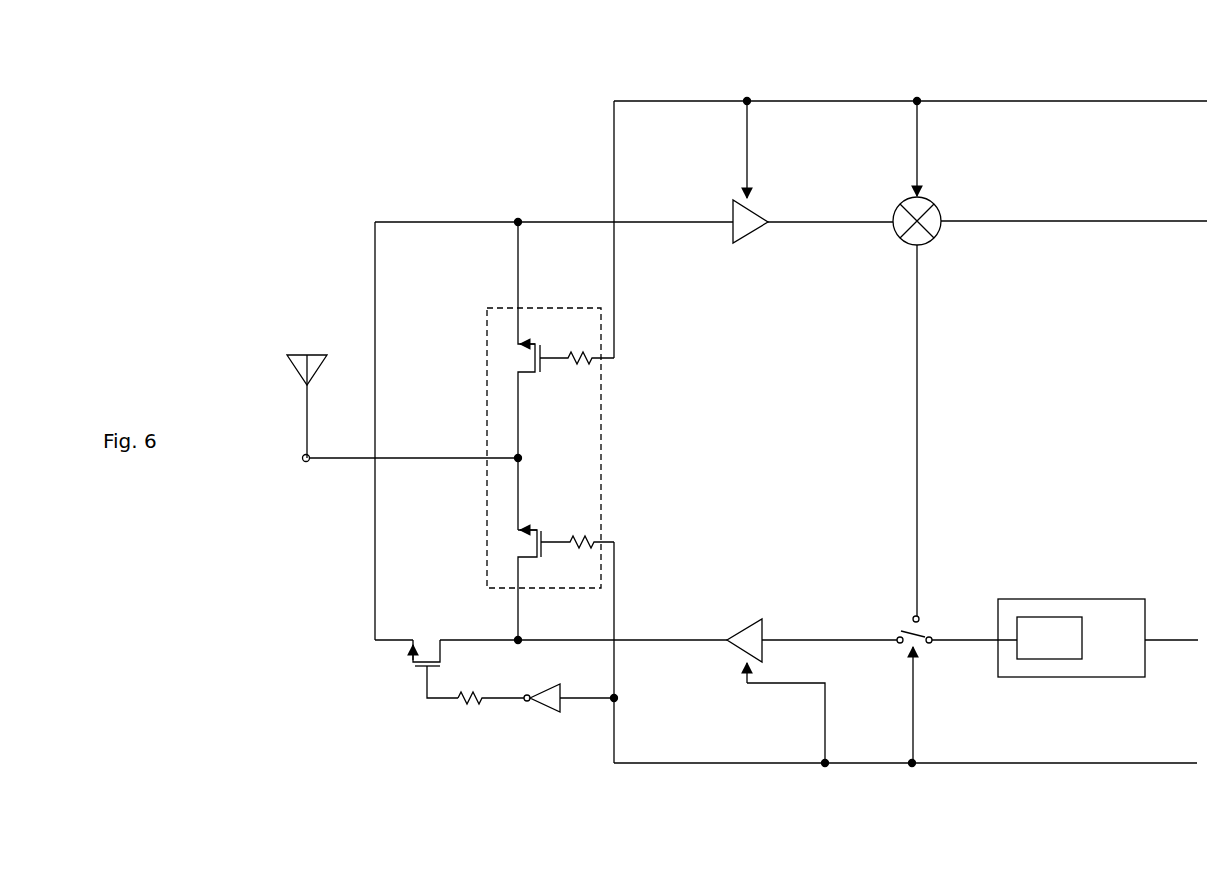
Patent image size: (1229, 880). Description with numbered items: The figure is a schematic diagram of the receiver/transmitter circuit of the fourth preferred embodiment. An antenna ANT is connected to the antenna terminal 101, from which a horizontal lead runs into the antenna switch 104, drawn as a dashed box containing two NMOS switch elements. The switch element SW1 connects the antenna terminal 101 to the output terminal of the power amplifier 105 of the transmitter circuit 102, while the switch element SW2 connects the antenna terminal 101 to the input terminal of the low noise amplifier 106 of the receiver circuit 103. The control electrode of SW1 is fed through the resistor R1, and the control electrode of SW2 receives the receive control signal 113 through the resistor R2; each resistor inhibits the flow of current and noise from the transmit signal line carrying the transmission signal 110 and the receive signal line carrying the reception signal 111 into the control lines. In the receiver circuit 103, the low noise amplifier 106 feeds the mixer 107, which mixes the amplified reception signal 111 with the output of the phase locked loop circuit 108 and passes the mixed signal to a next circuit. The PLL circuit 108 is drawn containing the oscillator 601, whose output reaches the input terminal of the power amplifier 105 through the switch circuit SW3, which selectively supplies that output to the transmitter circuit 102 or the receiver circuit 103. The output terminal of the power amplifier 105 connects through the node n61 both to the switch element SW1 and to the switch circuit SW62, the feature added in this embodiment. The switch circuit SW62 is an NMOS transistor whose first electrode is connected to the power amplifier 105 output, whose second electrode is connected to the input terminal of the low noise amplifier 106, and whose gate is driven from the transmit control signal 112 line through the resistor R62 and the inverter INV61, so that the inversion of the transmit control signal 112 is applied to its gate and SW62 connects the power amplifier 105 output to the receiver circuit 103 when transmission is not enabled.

The antenna terminal 101 is at (303, 467).
The transmitter circuit 102 is at (756, 585).
The receiver circuit 103 is at (781, 304).
The antenna switch 104 is at (486, 520).
The power amplifier 105 is at (766, 624).
The low noise amplifier 106 is at (766, 206).
The mixer 107 is at (940, 200).
The phase locked loop circuit 108 is at (1083, 598).
The transmission signal 110 is at (682, 645).
The reception signal 111 is at (664, 222).
The transmit control signal 112 is at (1078, 763).
The receive control signal 113 is at (1095, 101).
The oscillator 601 is at (1042, 660).
The antenna ANT is at (301, 350).
The switch element SW1 is at (545, 570).
The switch element SW2 is at (545, 376).
The switch circuit SW3 is at (932, 612).
The switch circuit SW62 is at (432, 656).
The resistor R1 is at (590, 538).
The resistor R2 is at (598, 362).
The resistor R62 is at (487, 709).
The inverter INV61 is at (548, 712).
The node n61 is at (516, 660).